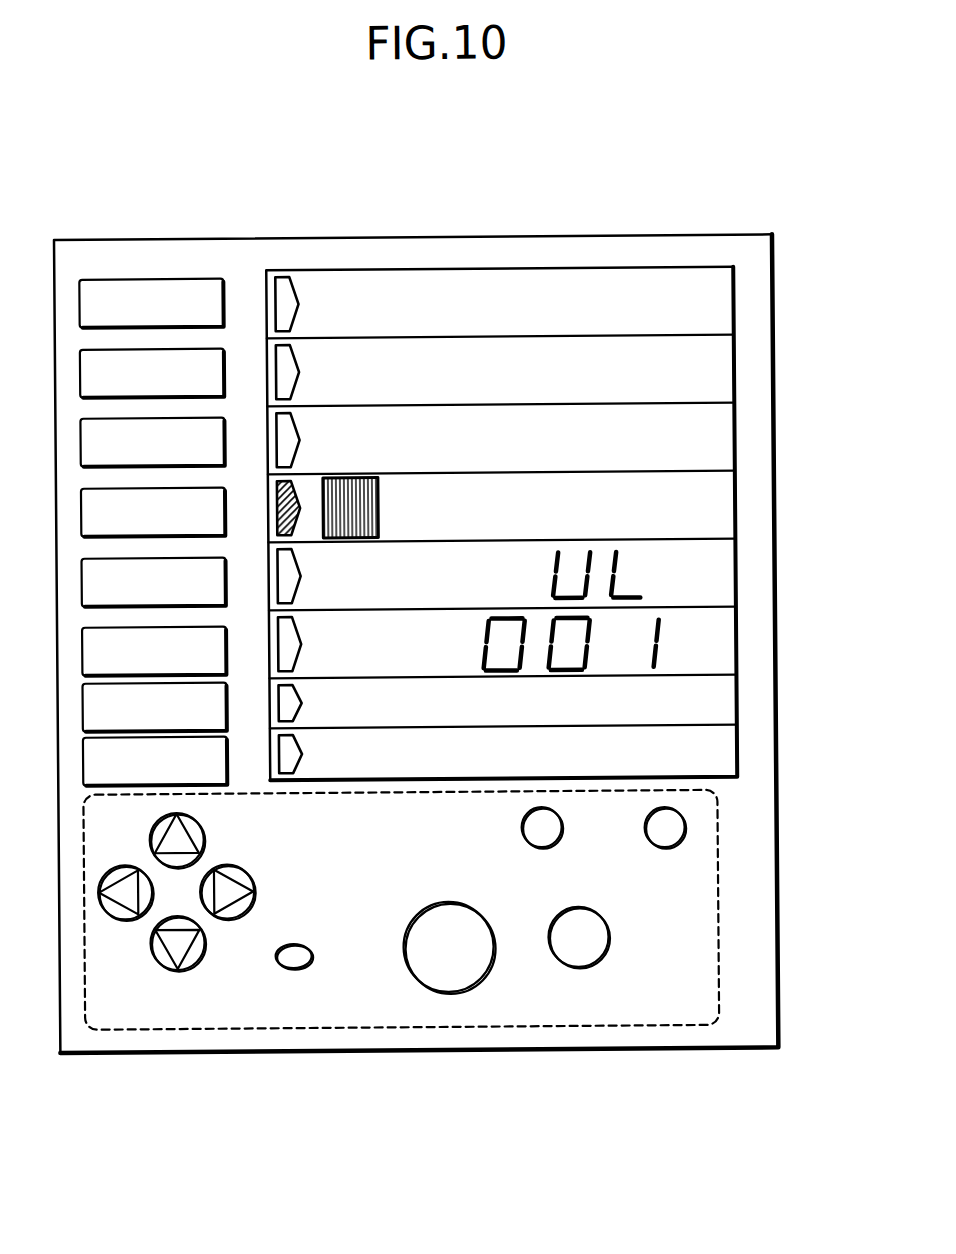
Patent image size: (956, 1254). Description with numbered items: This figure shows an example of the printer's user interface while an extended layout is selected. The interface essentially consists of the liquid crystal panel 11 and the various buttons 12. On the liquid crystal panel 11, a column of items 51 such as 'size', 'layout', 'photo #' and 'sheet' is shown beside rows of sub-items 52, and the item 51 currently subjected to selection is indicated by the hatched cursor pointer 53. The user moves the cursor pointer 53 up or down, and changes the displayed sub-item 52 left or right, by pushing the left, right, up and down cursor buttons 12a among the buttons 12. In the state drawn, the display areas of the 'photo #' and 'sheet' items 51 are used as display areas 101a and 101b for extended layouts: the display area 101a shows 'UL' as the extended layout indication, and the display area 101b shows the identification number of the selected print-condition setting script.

The item 51 is at (148, 273).
The sub-item 52 is at (366, 287).
The cursor pointer 53 is at (285, 280).
The liquid crystal panel 11 is at (623, 270).
The display area for extended layouts 101a is at (733, 583).
The display area for extended layouts 101b is at (733, 647).
The buttons 12 is at (718, 883).
The cursor buttons 12a is at (156, 999).